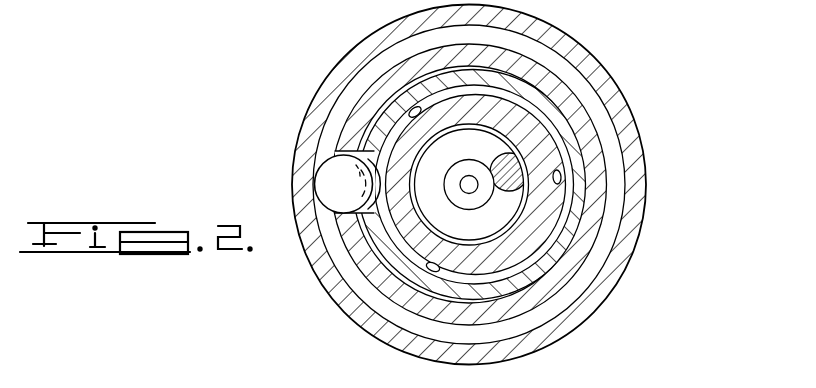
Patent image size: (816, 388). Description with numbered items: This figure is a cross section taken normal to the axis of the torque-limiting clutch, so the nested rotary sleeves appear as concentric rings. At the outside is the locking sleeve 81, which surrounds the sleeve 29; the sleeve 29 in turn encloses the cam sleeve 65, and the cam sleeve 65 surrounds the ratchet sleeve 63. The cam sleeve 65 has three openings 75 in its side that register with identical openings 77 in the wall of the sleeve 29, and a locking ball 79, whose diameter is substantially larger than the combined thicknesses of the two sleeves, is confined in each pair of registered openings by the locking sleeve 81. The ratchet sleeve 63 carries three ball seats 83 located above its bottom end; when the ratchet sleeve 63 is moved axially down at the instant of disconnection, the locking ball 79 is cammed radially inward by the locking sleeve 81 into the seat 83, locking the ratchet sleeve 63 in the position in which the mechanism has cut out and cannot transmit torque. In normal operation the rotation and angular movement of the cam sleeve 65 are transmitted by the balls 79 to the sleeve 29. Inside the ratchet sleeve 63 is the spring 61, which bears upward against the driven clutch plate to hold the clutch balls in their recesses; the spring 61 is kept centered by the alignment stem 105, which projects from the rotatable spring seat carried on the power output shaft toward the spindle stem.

The locking sleeve 81 is at (568, 46).
The sleeve 29 is at (565, 91).
The spring 61 is at (528, 170).
The cam sleeve 65 is at (573, 225).
The ratchet sleeve 63 is at (547, 252).
The ball seat 83 is at (380, 178).
The alignment stem 105 is at (466, 192).
The opening 77 is at (332, 152).
The opening 75 is at (336, 158).
The locking ball 79 is at (316, 183).